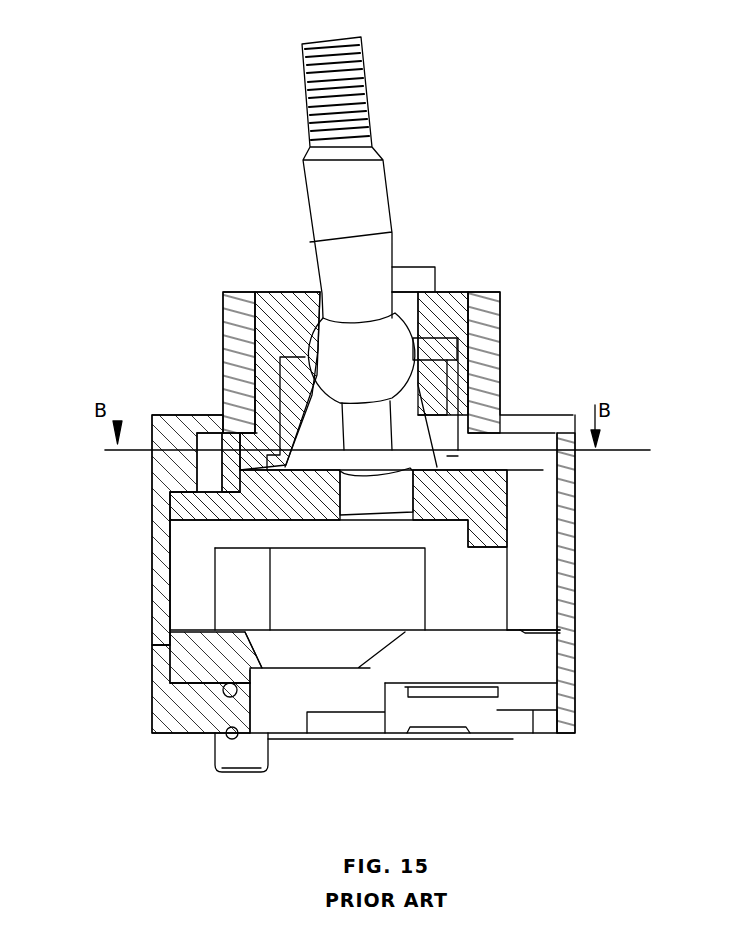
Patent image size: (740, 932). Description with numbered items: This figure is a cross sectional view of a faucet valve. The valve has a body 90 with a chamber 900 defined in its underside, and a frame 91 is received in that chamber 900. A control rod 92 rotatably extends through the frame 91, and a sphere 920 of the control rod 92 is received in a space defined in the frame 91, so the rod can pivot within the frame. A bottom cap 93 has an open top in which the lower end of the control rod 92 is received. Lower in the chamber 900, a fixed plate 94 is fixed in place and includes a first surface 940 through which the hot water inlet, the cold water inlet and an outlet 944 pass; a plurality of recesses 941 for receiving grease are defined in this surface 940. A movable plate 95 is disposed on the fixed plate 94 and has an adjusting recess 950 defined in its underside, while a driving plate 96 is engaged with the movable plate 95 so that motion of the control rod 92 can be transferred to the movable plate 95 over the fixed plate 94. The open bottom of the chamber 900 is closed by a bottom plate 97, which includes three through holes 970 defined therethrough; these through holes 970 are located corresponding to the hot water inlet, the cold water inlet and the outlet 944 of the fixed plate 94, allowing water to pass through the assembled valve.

The body 90 is at (560, 565).
The frame 91 is at (272, 300).
The control rod 92 is at (380, 206).
The sphere 920 is at (395, 325).
The bottom cap 93 is at (288, 381).
The fixed plate 94 is at (548, 672).
The first surface 940 is at (520, 627).
The recesses 941 is at (240, 625).
The outlet 944 is at (318, 655).
The movable plate 95 is at (188, 541).
The adjusting recess 950 is at (237, 588).
The driving plate 96 is at (490, 507).
The chamber 900 is at (545, 537).
The bottom plate 97 is at (165, 718).
The through holes 970 is at (365, 705).